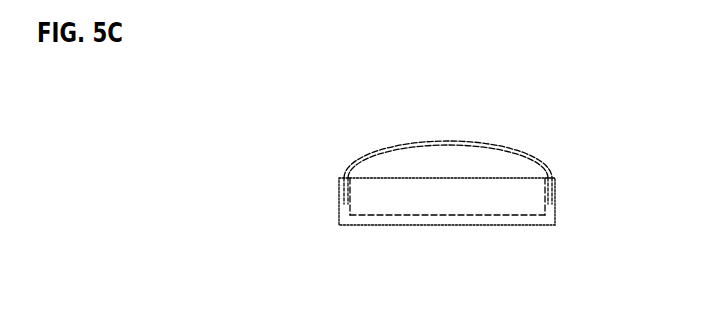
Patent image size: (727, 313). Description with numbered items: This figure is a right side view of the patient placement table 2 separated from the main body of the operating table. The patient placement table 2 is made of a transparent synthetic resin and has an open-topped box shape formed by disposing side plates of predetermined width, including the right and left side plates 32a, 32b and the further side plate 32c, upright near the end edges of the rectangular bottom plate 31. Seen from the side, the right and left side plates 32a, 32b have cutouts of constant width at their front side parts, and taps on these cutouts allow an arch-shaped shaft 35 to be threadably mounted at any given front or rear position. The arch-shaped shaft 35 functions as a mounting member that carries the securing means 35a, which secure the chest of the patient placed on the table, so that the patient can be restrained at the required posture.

The patient placement table 2 is at (546, 107).
The bottom plate 31 is at (395, 219).
The right side plate 32a is at (340, 190).
The left side plate 32b is at (557, 195).
The side plate 32c is at (448, 210).
The arch-shaped shaft 35 is at (443, 140).
The securing means 35a is at (448, 161).